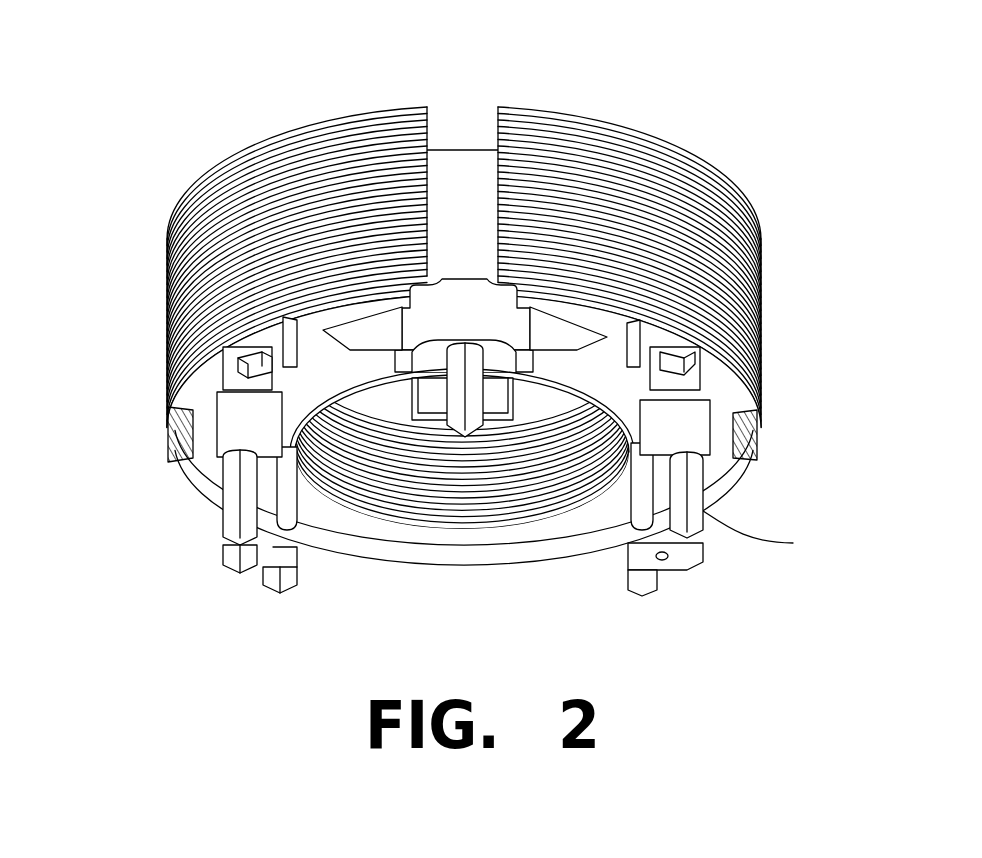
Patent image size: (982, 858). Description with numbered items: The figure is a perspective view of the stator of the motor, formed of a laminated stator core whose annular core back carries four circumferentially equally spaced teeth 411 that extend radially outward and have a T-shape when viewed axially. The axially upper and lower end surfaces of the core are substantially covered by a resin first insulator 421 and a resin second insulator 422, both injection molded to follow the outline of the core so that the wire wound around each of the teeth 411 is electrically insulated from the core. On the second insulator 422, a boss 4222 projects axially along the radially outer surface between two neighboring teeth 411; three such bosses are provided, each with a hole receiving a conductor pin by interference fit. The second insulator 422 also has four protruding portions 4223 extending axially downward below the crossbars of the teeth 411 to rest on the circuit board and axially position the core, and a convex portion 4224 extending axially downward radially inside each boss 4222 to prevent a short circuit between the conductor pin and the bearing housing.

The teeth 411 is at (283, 183).
The first insulator 421 is at (472, 182).
The second insulator 422 is at (602, 392).
The boss 4222 is at (230, 428).
The protruding portions 4223 is at (668, 577).
The convex portion 4224 is at (280, 593).